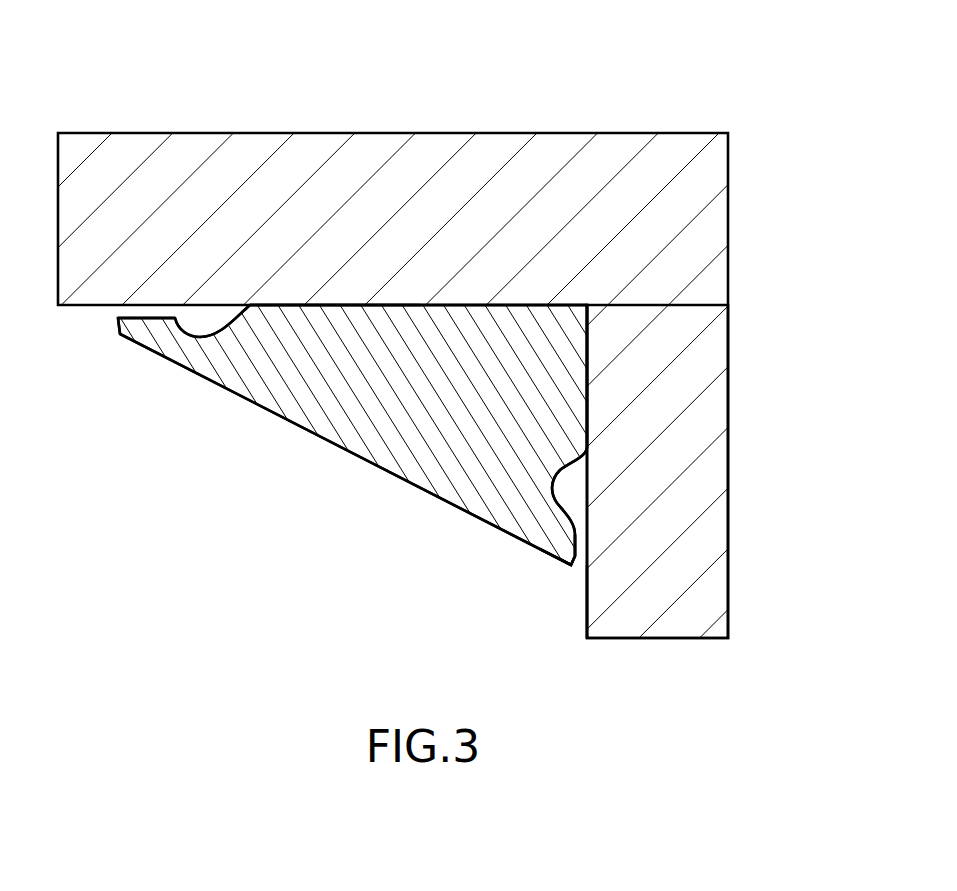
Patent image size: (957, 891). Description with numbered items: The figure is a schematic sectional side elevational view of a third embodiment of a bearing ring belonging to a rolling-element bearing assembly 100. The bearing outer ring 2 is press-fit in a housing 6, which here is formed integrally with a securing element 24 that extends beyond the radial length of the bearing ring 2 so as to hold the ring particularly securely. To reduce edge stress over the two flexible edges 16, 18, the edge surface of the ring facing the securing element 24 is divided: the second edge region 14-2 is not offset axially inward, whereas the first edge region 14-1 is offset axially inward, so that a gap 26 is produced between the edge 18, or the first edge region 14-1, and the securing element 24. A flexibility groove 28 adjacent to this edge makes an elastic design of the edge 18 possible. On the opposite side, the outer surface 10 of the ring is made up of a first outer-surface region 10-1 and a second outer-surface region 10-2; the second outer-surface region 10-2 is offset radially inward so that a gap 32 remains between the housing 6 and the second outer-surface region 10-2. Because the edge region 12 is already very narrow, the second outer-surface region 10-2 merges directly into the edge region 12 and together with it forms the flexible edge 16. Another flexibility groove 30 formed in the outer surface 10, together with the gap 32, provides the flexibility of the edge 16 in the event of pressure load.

The rolling-element bearing assembly 100 is at (395, 42).
The housing 6 is at (545, 153).
The bearing outer ring 2 is at (416, 476).
The outer surface 10 is at (417, 305).
The first outer-surface region 10-1 is at (335, 308).
The second outer-surface region 10-2 is at (160, 317).
The flexibility groove 30 is at (213, 320).
The gap 32 is at (137, 311).
The edge region 12 is at (118, 329).
The flexible edge 16 is at (162, 343).
The flexible edge 18 is at (557, 544).
The gap 26 is at (574, 560).
The flexibility groove 28 is at (582, 483).
The second edge region 14-2 is at (587, 402).
The first edge region 14-1 is at (580, 540).
The securing element 24 is at (695, 497).